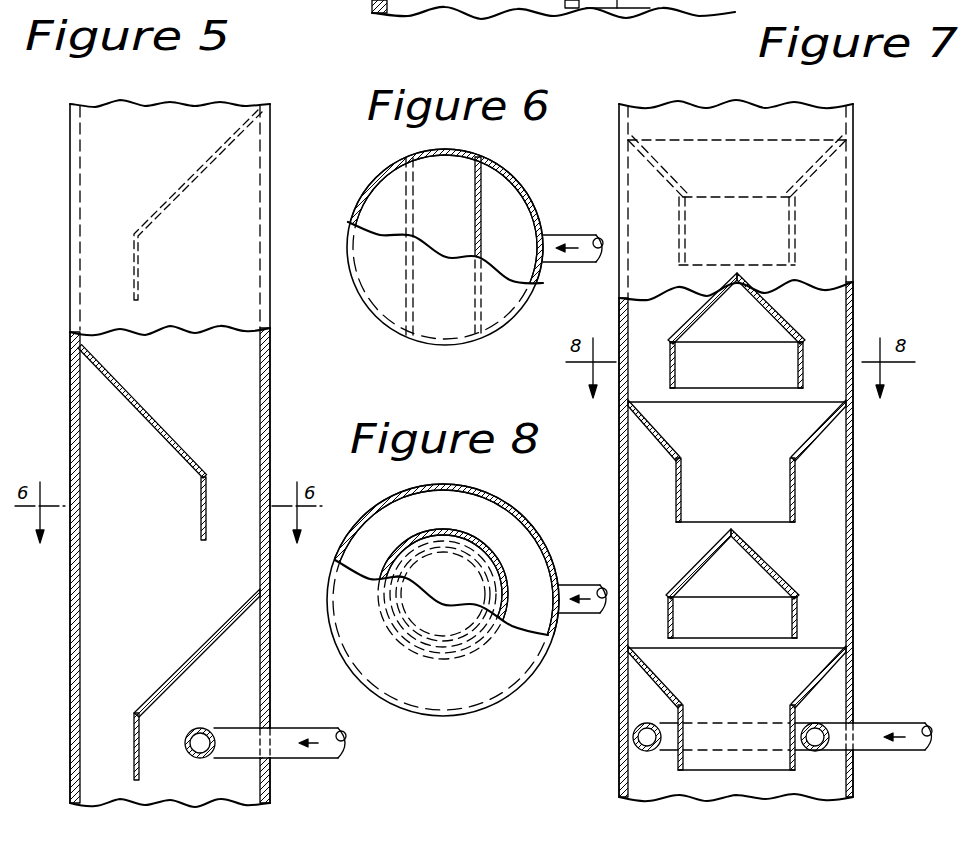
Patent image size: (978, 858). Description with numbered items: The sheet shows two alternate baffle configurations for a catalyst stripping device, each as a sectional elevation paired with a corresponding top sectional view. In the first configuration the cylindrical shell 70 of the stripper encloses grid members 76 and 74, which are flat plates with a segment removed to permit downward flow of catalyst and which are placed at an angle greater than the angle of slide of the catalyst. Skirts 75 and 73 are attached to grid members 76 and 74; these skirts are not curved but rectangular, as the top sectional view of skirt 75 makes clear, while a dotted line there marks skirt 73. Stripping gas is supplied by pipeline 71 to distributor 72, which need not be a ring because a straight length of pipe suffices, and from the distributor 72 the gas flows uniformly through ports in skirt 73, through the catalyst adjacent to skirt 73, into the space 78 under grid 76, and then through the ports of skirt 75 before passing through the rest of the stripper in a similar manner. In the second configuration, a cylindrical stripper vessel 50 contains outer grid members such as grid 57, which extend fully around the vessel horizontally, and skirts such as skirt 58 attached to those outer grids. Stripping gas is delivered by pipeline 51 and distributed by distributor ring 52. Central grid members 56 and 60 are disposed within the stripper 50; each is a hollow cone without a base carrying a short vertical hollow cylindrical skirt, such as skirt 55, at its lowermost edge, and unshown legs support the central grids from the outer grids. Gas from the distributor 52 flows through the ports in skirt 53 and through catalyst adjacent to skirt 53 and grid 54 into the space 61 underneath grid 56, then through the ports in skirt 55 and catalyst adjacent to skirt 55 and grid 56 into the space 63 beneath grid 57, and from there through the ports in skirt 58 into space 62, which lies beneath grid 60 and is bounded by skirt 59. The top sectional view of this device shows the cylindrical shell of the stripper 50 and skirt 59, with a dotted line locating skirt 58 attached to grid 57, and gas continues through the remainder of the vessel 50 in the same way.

In FIG. 8, the stripper vessel 50 is at (500, 698).
In FIG. 7, the stripper vessel 50 is at (848, 483).
In FIG. 8, the pipeline 51 is at (578, 585).
In FIG. 7, the pipeline 51 is at (873, 722).
In FIG. 7, the distributor ring 52 is at (808, 752).
In FIG. 7, the skirt 53 is at (678, 758).
In FIG. 7, the grid 54 is at (658, 676).
In FIG. 7, the skirt 55 is at (672, 628).
In FIG. 7, the central grid member 56 is at (768, 566).
In FIG. 7, the outer grid member 57 is at (812, 426).
In FIG. 8, the skirt 58 is at (482, 570).
In FIG. 7, the skirt 58 is at (680, 497).
In FIG. 8, the skirt 59 is at (430, 538).
In FIG. 7, the skirt 59 is at (677, 372).
In FIG. 7, the central grid member 60 is at (773, 309).
In FIG. 7, the space 61 is at (744, 590).
In FIG. 7, the space 62 is at (746, 330).
In FIG. 7, the space 63 is at (656, 498).
In FIG. 5, the cylindrical shell 70 is at (268, 376).
In FIG. 6, the cylindrical shell 70 is at (385, 170).
In FIG. 5, the pipeline 71 is at (288, 728).
In FIG. 6, the pipeline 71 is at (583, 235).
In FIG. 5, the distributor 72 is at (197, 762).
In FIG. 5, the skirt 73 is at (140, 745).
In FIG. 6, the skirt 73 is at (418, 188).
In FIG. 5, the grid member 74 is at (212, 637).
In FIG. 5, the skirt 75 is at (200, 516).
In FIG. 6, the skirt 75 is at (482, 240).
In FIG. 5, the grid member 76 is at (150, 416).
In FIG. 5, the space 78 is at (140, 477).